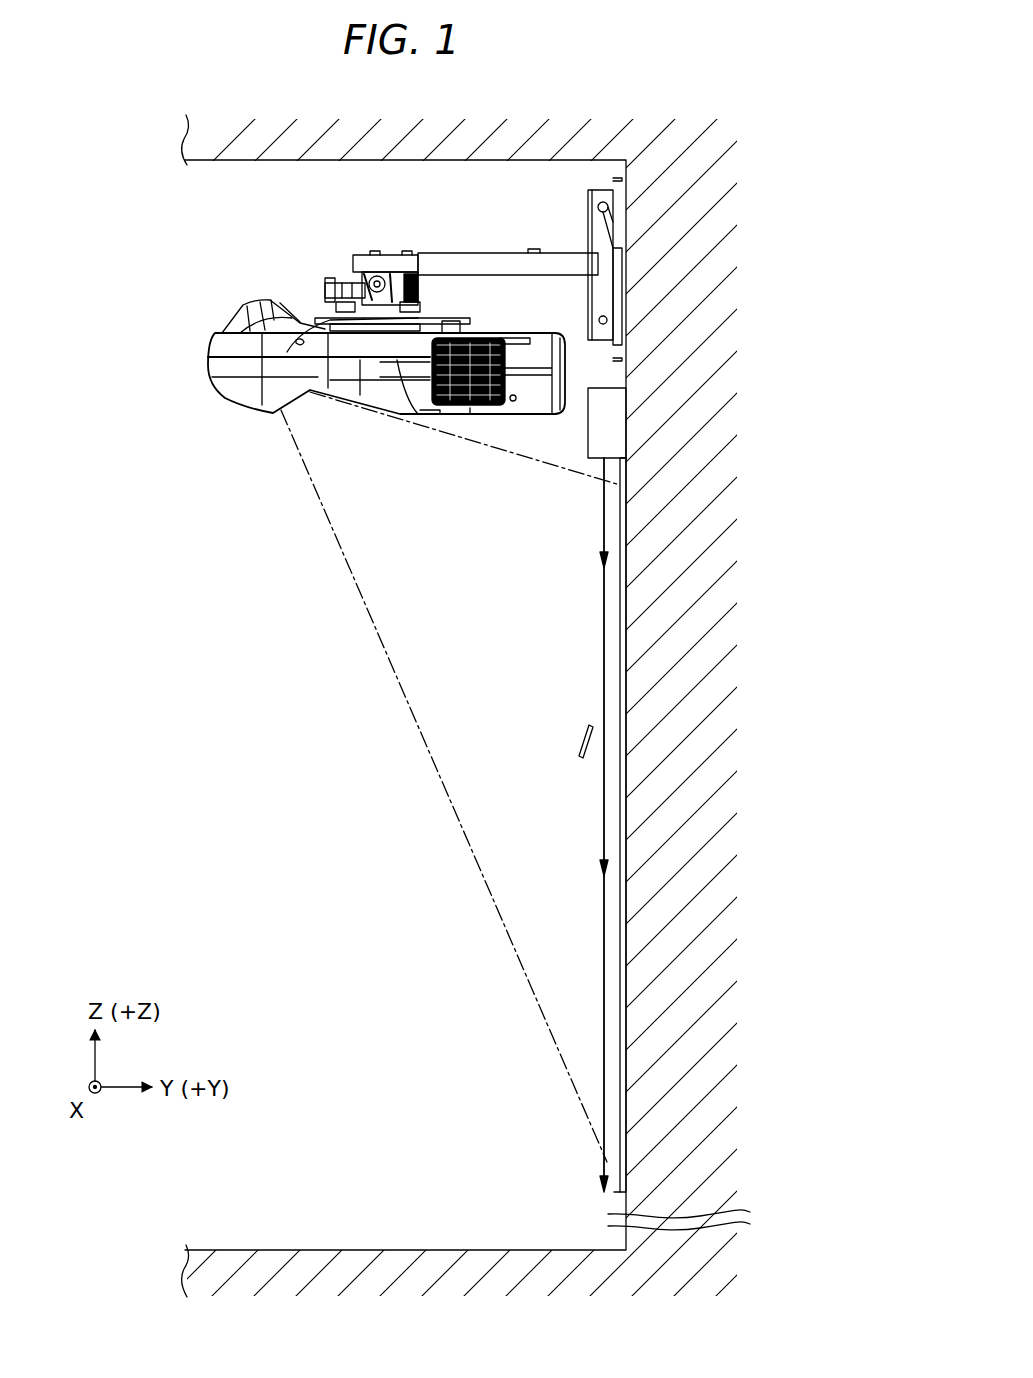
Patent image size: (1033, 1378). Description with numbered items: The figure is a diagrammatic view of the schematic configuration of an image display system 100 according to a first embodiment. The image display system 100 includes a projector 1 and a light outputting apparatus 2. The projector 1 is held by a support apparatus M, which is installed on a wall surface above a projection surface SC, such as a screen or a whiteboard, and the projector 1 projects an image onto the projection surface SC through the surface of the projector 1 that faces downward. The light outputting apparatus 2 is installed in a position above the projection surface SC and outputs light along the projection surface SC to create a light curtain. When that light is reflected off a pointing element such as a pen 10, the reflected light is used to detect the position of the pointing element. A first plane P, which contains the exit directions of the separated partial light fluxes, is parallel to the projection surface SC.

The image display system 100 is at (146, 288).
The projector 1 is at (222, 344).
The light outputting apparatus 2 is at (590, 440).
The pen 10 is at (583, 738).
The support apparatus M is at (478, 251).
The first plane P is at (604, 602).
The projection surface SC is at (619, 952).